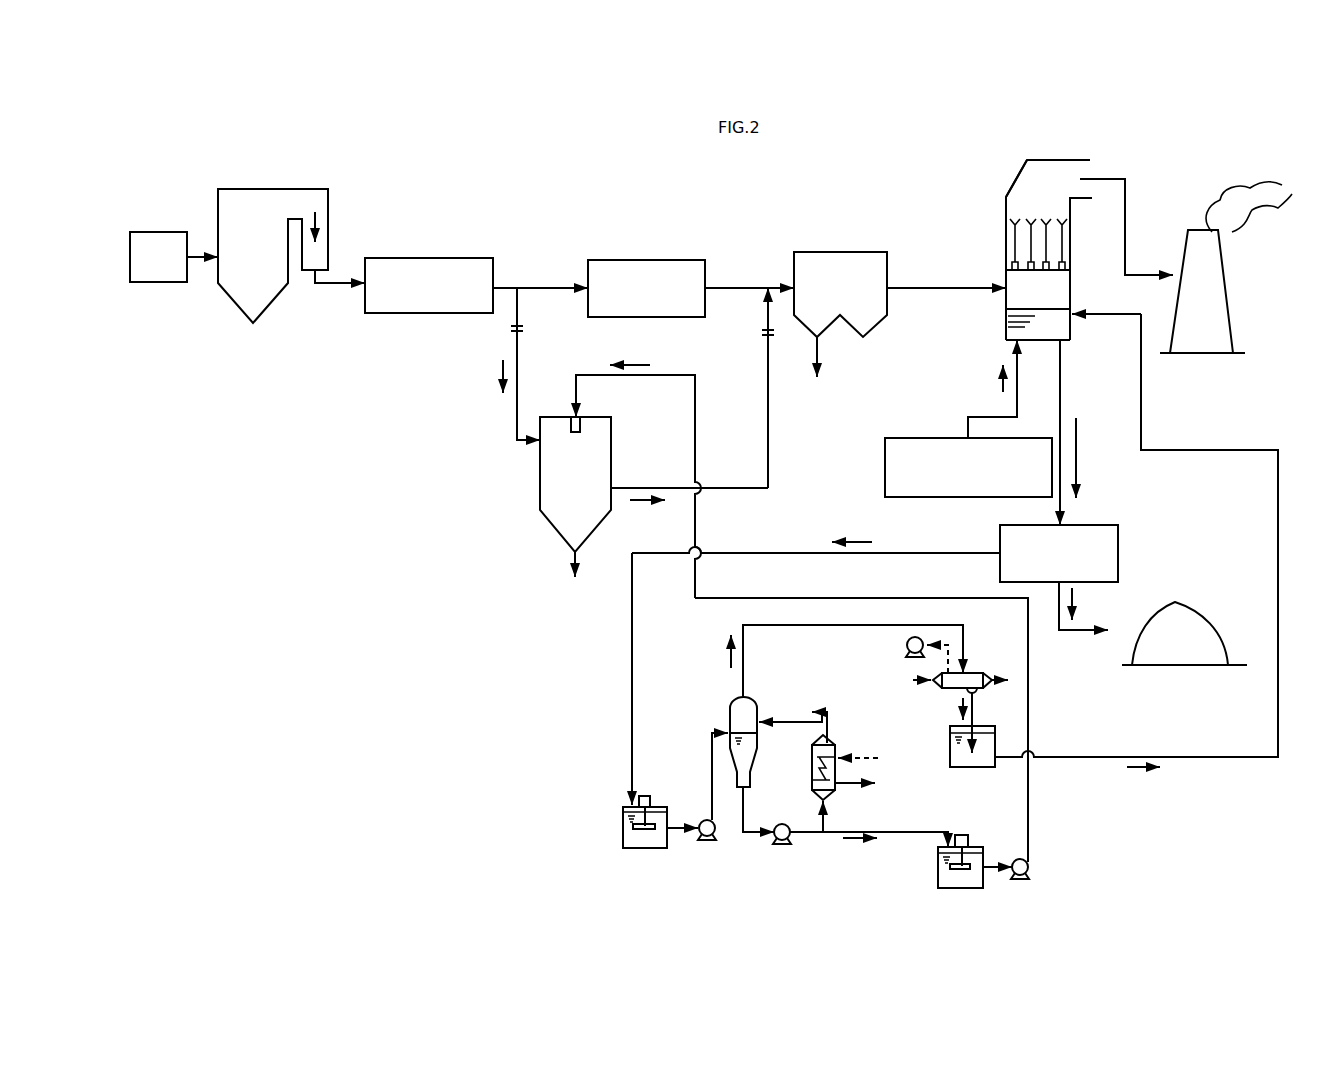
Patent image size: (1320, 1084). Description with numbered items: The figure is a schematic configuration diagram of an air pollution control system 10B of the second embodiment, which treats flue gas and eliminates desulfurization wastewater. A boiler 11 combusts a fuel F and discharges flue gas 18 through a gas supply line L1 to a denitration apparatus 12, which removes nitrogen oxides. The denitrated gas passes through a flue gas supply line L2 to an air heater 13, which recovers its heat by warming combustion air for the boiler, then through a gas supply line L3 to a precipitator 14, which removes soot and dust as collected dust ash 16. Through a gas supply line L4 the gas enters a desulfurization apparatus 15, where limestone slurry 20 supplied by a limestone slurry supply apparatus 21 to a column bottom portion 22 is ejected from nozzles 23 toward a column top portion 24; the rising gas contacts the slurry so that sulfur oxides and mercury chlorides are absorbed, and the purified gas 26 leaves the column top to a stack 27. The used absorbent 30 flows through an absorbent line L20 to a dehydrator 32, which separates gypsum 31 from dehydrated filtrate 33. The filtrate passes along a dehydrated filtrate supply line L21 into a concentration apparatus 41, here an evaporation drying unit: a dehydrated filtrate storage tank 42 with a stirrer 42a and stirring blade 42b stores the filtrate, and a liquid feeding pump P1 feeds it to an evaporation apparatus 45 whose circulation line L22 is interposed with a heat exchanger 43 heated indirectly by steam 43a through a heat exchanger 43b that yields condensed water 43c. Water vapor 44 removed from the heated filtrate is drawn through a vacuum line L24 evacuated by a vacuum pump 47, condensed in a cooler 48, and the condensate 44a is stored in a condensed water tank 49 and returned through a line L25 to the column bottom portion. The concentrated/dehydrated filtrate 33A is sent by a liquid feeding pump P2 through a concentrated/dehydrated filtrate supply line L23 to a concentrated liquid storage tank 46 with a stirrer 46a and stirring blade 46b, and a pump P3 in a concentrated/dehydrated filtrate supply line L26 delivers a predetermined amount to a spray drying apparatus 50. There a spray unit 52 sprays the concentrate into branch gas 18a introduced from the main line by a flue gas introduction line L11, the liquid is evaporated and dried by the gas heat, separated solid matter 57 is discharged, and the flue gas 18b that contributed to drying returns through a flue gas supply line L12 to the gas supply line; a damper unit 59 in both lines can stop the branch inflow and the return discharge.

The fuel F is at (150, 232).
The air pollution control system 10B is at (656, 170).
The boiler 11 is at (242, 189).
The denitration apparatus 12 is at (445, 258).
The air heater 13 is at (683, 259).
The precipitator 14 is at (843, 252).
The desulfurization apparatus 15 is at (1058, 160).
The dust ash 16 is at (830, 378).
The flue gas 18 is at (318, 229).
The branch gas 18a is at (503, 378).
The flue gas 18b is at (646, 505).
The limestone slurry 20 is at (1070, 340).
The limestone slurry supply apparatus 21 is at (955, 497).
The column bottom portion 22 is at (1075, 322).
The nozzles 23 is at (1072, 262).
The column top portion 24 is at (1020, 175).
The purified gas 26 is at (1128, 217).
The stack 27 is at (1228, 290).
The absorbent 30 is at (1078, 458).
The gypsum 31 is at (1077, 605).
The dehydrator 32 is at (1120, 553).
The dehydrated filtrate 33 is at (850, 540).
The concentrated/dehydrated filtrate 33A is at (640, 364).
The concentration apparatus 41 is at (618, 672).
The dehydrated filtrate storage tank 42 is at (617, 828).
The stirrer 42a is at (645, 796).
The stirring blade 42b is at (648, 850).
The heat exchanger 43 is at (838, 743).
The steam 43a is at (878, 758).
The heat exchanger 43b is at (812, 778).
The condensed water 43c is at (860, 789).
The water vapor 44 is at (729, 650).
The condensate 44a is at (960, 710).
The evaporation apparatus 45 is at (729, 707).
The concentrated liquid storage tank 46 is at (983, 840).
The stirrer 46a is at (963, 834).
The stirring blade 46b is at (945, 870).
The vacuum pump 47 is at (906, 646).
The cooler 48 is at (975, 672).
The condensed water tank 49 is at (985, 727).
The spray drying apparatus 50 is at (536, 495).
The spray unit 52 is at (572, 418).
The separated solid matter 57 is at (570, 556).
The damper unit 59 is at (506, 329).
The gas supply line L1 is at (350, 290).
The flue gas supply line L2 is at (548, 280).
The gas supply line L3 is at (756, 280).
The gas supply line L4 is at (946, 282).
The flue gas introduction line L11 is at (517, 408).
The flue gas supply line L12 is at (768, 390).
The absorbent line L20 is at (1063, 398).
The dehydrated filtrate supply line L21 is at (802, 553).
The circulation line L22 is at (786, 721).
The concentrated/dehydrated filtrate supply line L23 is at (918, 830).
The vacuum line L24 is at (803, 627).
The line L25 is at (1235, 760).
The concentrated/dehydrated filtrate supply line L26 is at (695, 428).
The liquid feeding pump P1 is at (712, 842).
The liquid feeding pump P2 is at (790, 844).
The pump P3 is at (1032, 868).